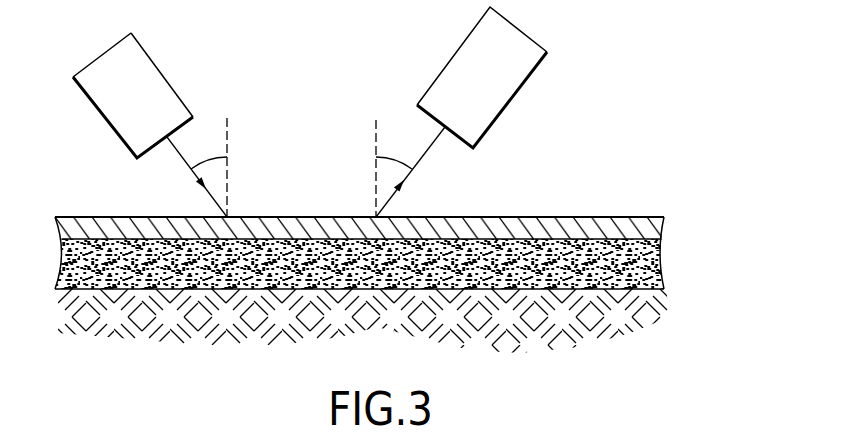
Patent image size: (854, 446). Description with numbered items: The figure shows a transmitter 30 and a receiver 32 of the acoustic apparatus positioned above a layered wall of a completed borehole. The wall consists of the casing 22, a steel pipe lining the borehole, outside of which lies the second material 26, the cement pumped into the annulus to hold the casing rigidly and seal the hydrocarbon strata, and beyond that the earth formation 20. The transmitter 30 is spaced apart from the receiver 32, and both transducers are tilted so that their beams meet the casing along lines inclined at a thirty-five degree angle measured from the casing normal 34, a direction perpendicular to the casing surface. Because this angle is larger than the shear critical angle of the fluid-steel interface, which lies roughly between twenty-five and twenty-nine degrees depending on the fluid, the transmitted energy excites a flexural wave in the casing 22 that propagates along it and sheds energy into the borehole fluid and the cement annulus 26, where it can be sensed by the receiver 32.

The earth formation 20 is at (668, 308).
The casing 22 is at (667, 223).
The second material 26 is at (662, 263).
The transmitter 30 is at (102, 55).
The receiver 32 is at (520, 26).
The casing normal 34 is at (228, 122).